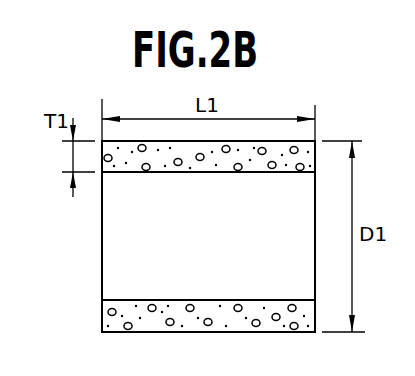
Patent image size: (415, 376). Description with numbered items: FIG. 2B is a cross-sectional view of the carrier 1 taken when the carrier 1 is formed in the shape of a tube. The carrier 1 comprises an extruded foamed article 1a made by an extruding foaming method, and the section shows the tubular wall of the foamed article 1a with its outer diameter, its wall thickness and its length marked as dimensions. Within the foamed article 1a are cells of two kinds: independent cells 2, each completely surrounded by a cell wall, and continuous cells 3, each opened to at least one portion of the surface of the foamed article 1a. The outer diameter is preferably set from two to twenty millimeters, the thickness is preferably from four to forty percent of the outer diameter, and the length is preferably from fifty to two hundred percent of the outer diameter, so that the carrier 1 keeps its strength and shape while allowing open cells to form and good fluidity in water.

The carrier 1 is at (86, 276).
The extruded foamed article 1a is at (115, 248).
The independent cells 2 is at (244, 172).
The continuous cells 3 is at (135, 303).